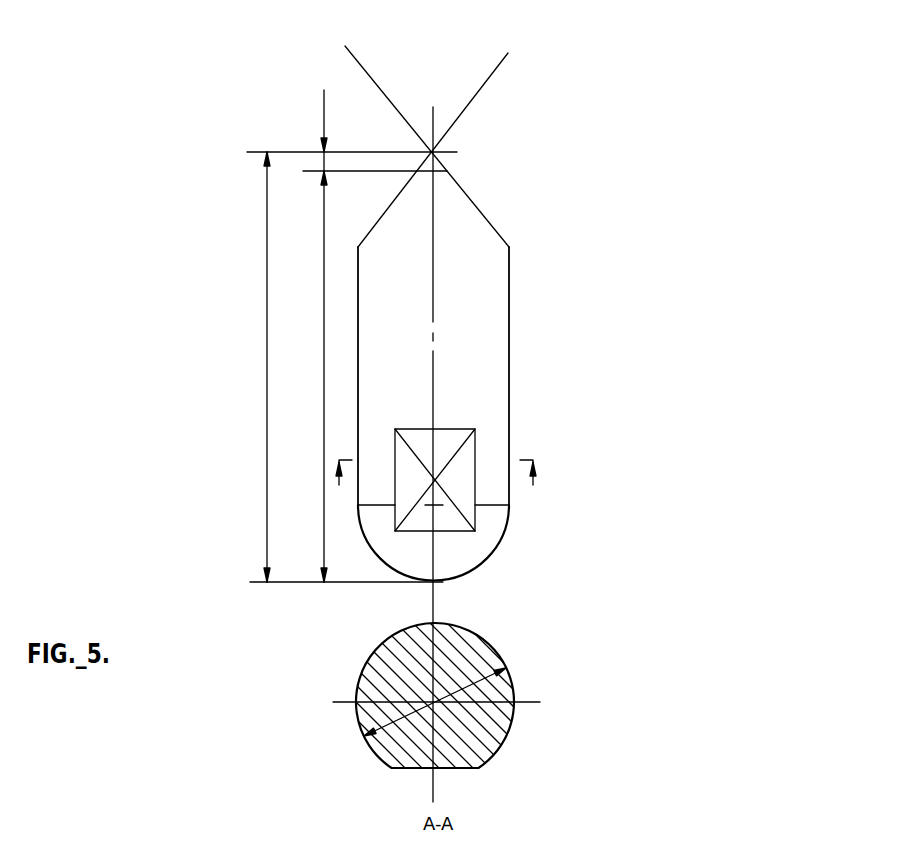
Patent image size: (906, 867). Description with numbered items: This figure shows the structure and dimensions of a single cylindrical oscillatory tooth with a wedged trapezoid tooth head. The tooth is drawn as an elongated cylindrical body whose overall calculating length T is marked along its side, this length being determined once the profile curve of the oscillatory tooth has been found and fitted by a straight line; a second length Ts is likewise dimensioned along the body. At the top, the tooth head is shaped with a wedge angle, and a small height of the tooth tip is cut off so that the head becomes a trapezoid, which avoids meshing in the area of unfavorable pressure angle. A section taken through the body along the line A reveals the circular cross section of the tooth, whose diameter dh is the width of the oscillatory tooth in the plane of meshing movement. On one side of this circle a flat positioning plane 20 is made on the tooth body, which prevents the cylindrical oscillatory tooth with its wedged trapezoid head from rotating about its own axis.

The positioning plane 20 is at (467, 769).
The calculating length T is at (267, 378).
The shank length dimension Ts is at (324, 382).
The diameter of oscillatory teeth dh is at (435, 702).
The section line A- A is at (435, 484).